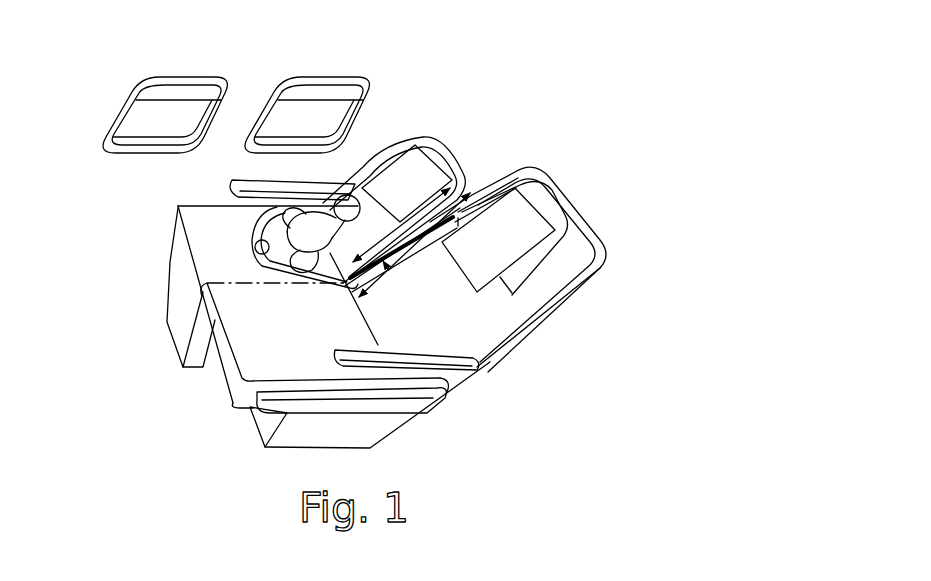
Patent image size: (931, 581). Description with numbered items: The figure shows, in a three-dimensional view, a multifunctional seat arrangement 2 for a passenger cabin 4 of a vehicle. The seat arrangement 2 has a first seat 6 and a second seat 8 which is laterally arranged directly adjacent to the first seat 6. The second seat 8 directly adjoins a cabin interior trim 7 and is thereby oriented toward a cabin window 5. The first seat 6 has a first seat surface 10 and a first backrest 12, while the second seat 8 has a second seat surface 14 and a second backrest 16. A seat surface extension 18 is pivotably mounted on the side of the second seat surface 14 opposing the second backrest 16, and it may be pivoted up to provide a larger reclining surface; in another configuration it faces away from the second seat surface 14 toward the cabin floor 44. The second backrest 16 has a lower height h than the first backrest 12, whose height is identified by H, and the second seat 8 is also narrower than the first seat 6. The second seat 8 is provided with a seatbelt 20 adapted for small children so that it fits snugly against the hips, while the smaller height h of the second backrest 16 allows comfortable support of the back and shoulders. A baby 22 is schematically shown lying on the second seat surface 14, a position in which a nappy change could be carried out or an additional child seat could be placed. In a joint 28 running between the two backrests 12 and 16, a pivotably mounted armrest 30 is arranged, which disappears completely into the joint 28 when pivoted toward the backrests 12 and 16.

The multifunctional seat arrangement 2 is at (519, 121).
The passenger cabin 4 is at (94, 189).
The cabin window 5 is at (226, 88).
The first seat 6 is at (573, 192).
The cabin interior trim 7 is at (252, 92).
The second seat 8 is at (461, 142).
The first seat surface 10 is at (258, 366).
The first backrest 12 is at (485, 314).
The second seat surface 14 is at (198, 249).
The second backrest 16 is at (364, 166).
The seat surface extension 18 is at (183, 283).
The seatbelt 20 is at (271, 185).
The baby 22 is at (328, 260).
The joint 28 is at (389, 272).
The armrest 30 is at (410, 245).
The cabin floor 44 is at (226, 422).
The height of the second backrest h is at (405, 232).
The height of the first backrest H is at (427, 250).